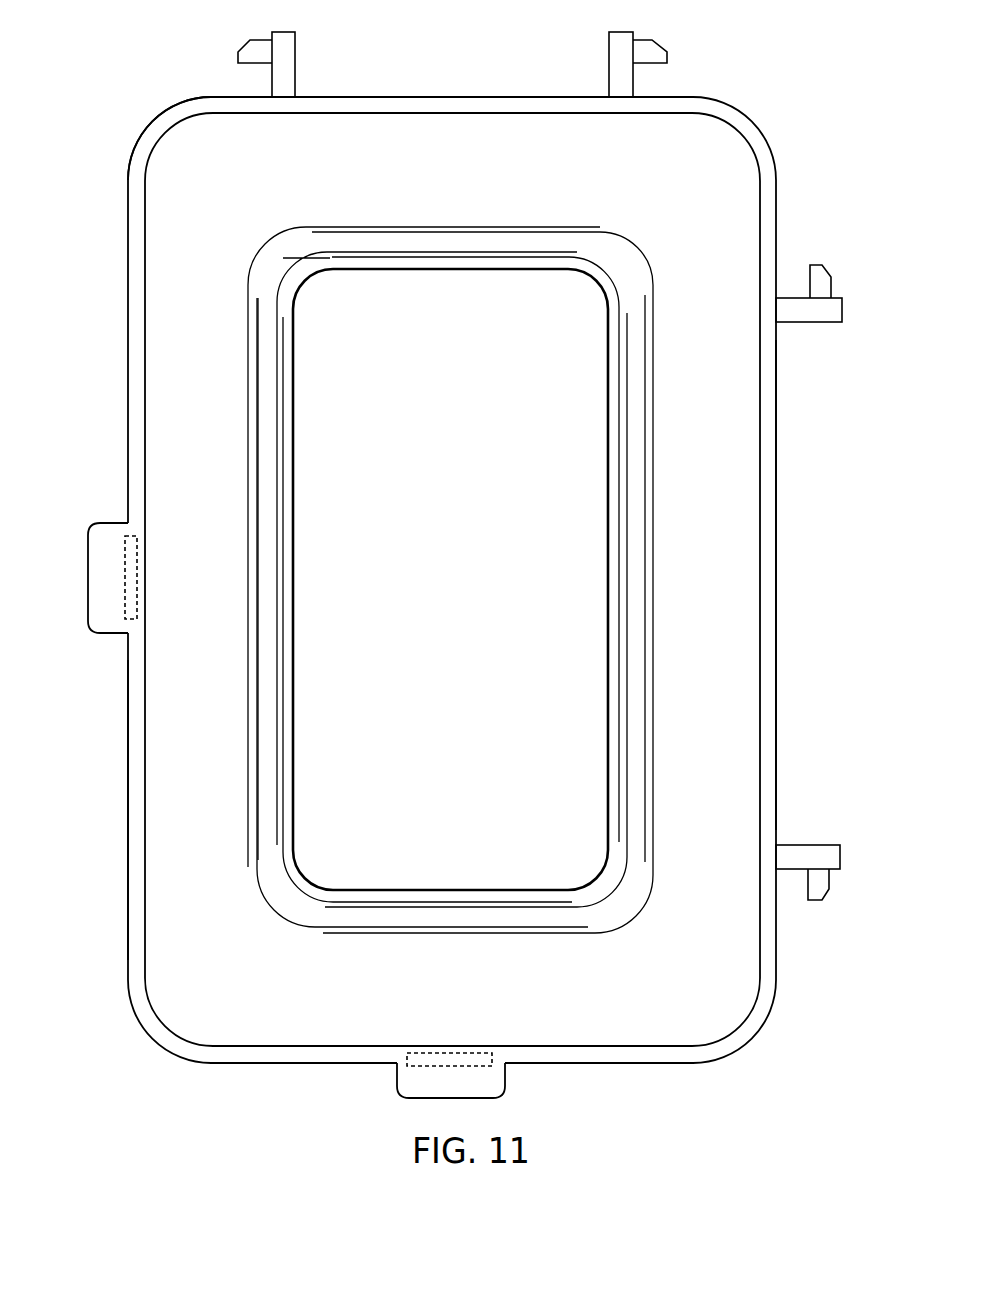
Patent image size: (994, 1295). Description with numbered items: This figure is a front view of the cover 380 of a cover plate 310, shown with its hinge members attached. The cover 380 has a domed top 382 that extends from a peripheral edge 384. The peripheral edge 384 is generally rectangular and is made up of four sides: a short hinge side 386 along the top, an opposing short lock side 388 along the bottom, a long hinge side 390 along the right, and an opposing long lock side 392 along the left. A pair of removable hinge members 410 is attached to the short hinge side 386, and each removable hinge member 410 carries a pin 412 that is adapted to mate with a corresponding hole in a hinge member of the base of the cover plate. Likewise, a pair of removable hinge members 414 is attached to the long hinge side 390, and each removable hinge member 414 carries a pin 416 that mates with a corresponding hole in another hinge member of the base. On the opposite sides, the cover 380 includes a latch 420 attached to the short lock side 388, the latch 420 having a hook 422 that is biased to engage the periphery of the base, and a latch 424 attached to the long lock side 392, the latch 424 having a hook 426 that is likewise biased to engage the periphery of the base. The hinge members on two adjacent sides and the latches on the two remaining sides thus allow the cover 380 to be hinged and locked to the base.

The cover plate 310 is at (118, 1065).
The cover 380 is at (170, 106).
The domed top 382 is at (213, 233).
The peripheral edge 384 is at (132, 152).
The short hinge side 386 is at (528, 97).
The short lock side 388 is at (257, 1063).
The long hinge side 390 is at (776, 477).
The long lock side 392 is at (128, 730).
The removable hinge member 410 is at (280, 58).
The pin 412 is at (257, 55).
The removable hinge member 414 is at (819, 312).
The pin 416 is at (822, 278).
The latch 420 is at (495, 1070).
The hook 422 is at (423, 1067).
The latch 424 is at (118, 623).
The hook 426 is at (125, 550).